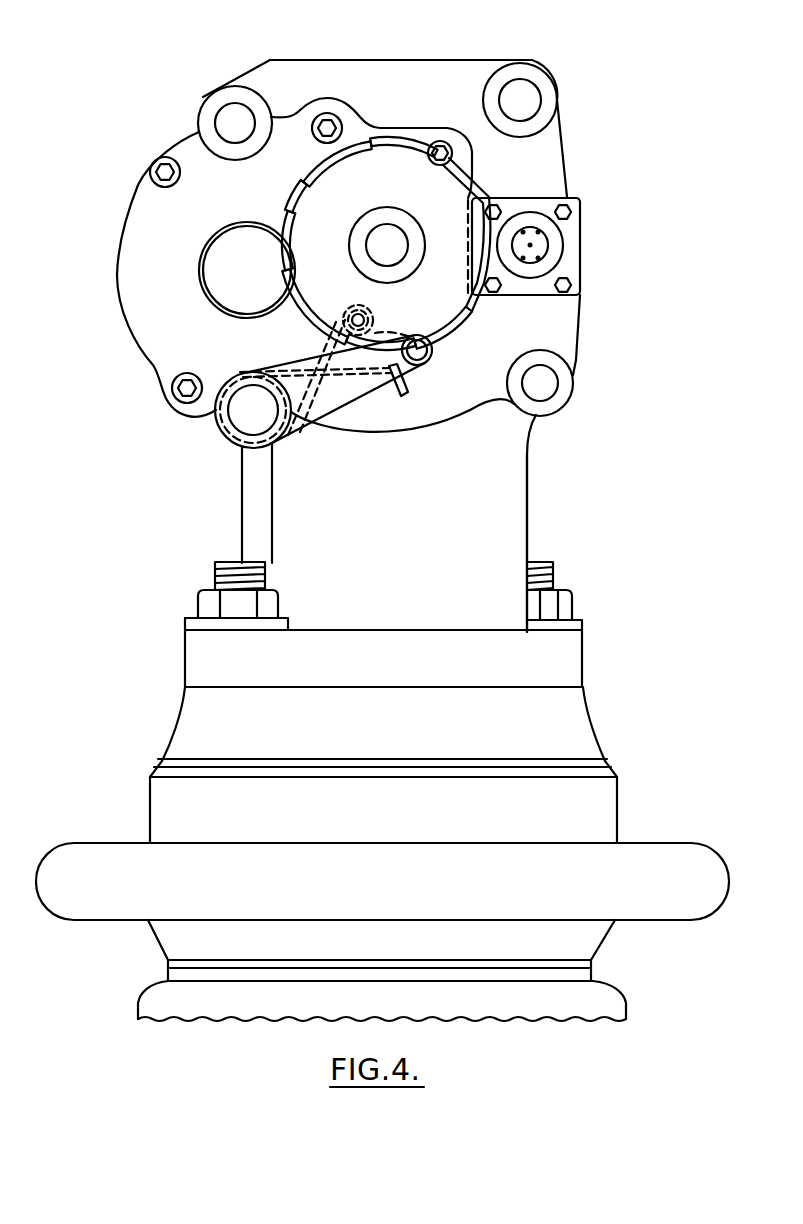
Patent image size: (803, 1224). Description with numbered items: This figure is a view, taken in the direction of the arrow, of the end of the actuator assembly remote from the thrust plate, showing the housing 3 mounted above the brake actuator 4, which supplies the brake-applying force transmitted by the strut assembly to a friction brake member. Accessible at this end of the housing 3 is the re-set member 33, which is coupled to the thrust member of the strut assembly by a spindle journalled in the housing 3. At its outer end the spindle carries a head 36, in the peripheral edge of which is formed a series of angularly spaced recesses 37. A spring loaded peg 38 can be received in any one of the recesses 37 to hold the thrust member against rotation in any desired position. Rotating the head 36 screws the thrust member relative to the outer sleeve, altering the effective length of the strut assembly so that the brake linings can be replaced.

The housing 3 is at (463, 480).
The brake actuator 4 is at (557, 796).
The re-set member 33 is at (368, 180).
The head 36 is at (433, 197).
The recesses 37 is at (438, 150).
The spring loaded peg 38 is at (420, 354).